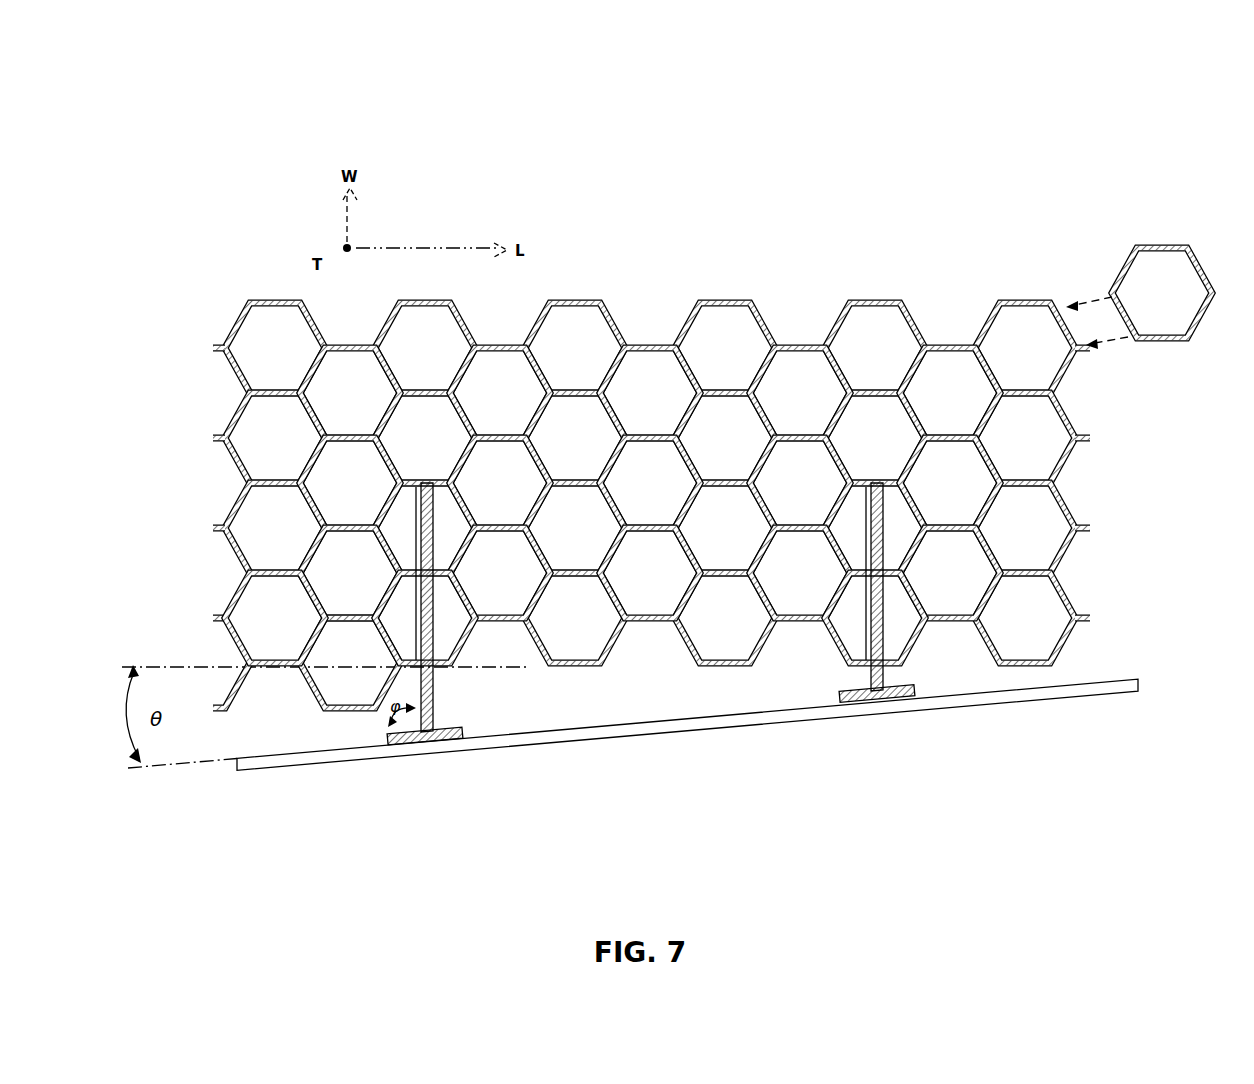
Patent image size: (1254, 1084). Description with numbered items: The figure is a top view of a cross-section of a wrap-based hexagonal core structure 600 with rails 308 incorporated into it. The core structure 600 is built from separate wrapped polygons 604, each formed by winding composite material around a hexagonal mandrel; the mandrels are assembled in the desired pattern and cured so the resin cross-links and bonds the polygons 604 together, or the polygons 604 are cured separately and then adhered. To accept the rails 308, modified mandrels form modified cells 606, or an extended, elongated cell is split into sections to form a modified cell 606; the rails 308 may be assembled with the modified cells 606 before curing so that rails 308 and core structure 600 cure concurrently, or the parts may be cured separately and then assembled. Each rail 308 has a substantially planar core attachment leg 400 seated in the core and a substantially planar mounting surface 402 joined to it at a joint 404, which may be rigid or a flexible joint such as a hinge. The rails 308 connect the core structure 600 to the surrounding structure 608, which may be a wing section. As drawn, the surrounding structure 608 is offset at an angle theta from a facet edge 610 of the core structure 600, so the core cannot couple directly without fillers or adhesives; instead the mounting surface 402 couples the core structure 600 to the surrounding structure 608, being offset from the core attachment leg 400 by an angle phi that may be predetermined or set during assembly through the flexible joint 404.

The core structure 600 is at (198, 168).
The polygon 604 is at (1163, 243).
The modified cell 606 is at (452, 623).
The surrounding structure 608 is at (1107, 688).
The facet edge 610 is at (273, 667).
The core attachment leg 400 is at (435, 689).
The mounting surface 402 is at (408, 744).
The joint 404 is at (462, 733).
The rail 308 is at (489, 764).